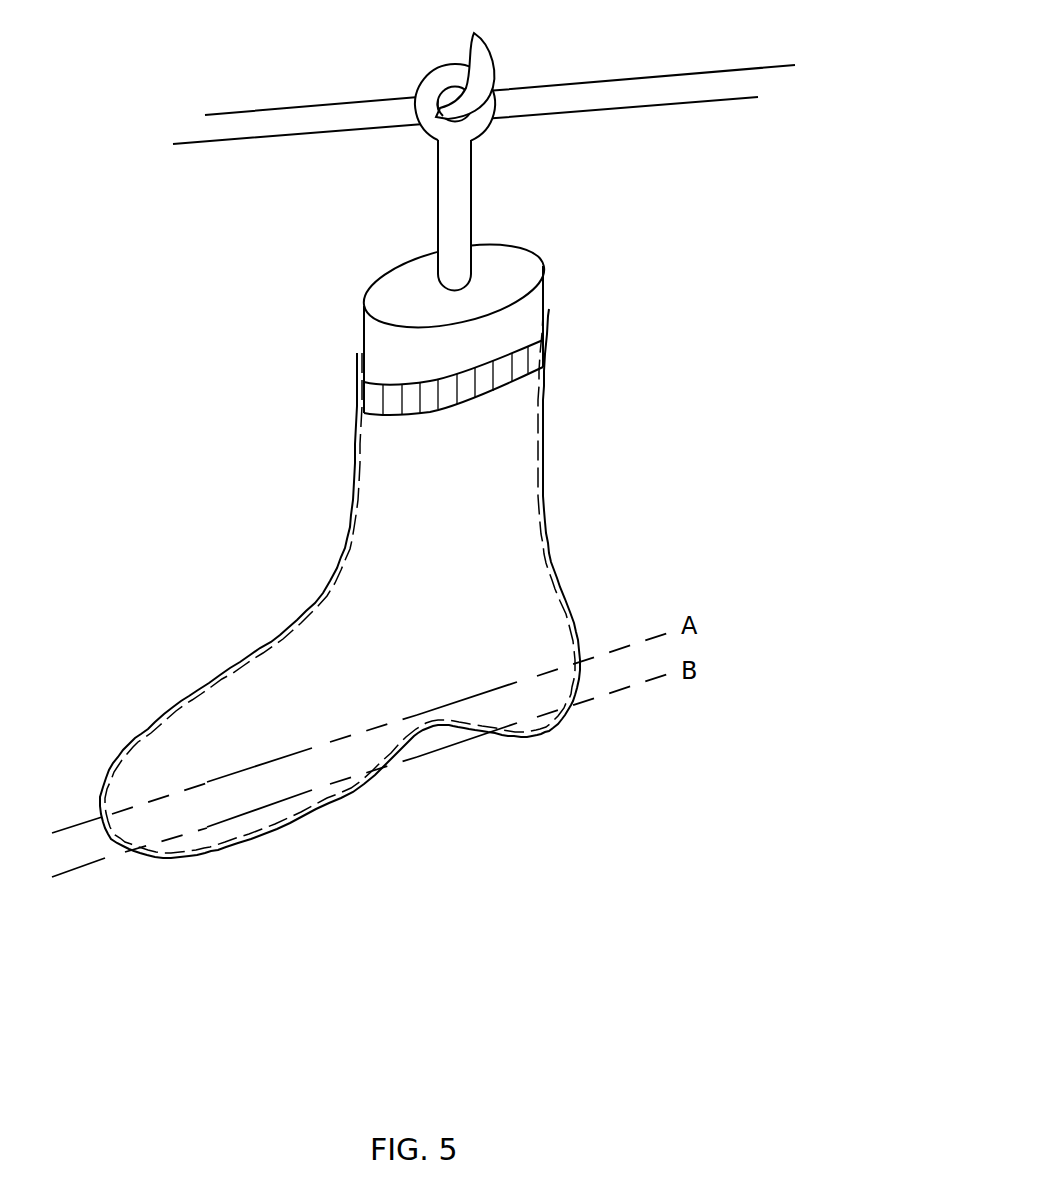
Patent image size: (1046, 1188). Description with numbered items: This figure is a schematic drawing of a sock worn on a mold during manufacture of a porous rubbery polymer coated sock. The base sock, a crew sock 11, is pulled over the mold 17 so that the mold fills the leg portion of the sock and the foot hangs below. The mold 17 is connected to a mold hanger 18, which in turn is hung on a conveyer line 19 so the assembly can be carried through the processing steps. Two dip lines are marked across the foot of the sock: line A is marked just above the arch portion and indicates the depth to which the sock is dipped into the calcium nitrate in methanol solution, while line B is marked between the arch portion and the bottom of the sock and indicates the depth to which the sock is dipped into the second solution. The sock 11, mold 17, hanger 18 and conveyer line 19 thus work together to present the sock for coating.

The crew sock 11 is at (543, 503).
The mold 17 is at (520, 320).
The mold hanger 18 is at (453, 202).
The conveyer line 19 is at (728, 78).